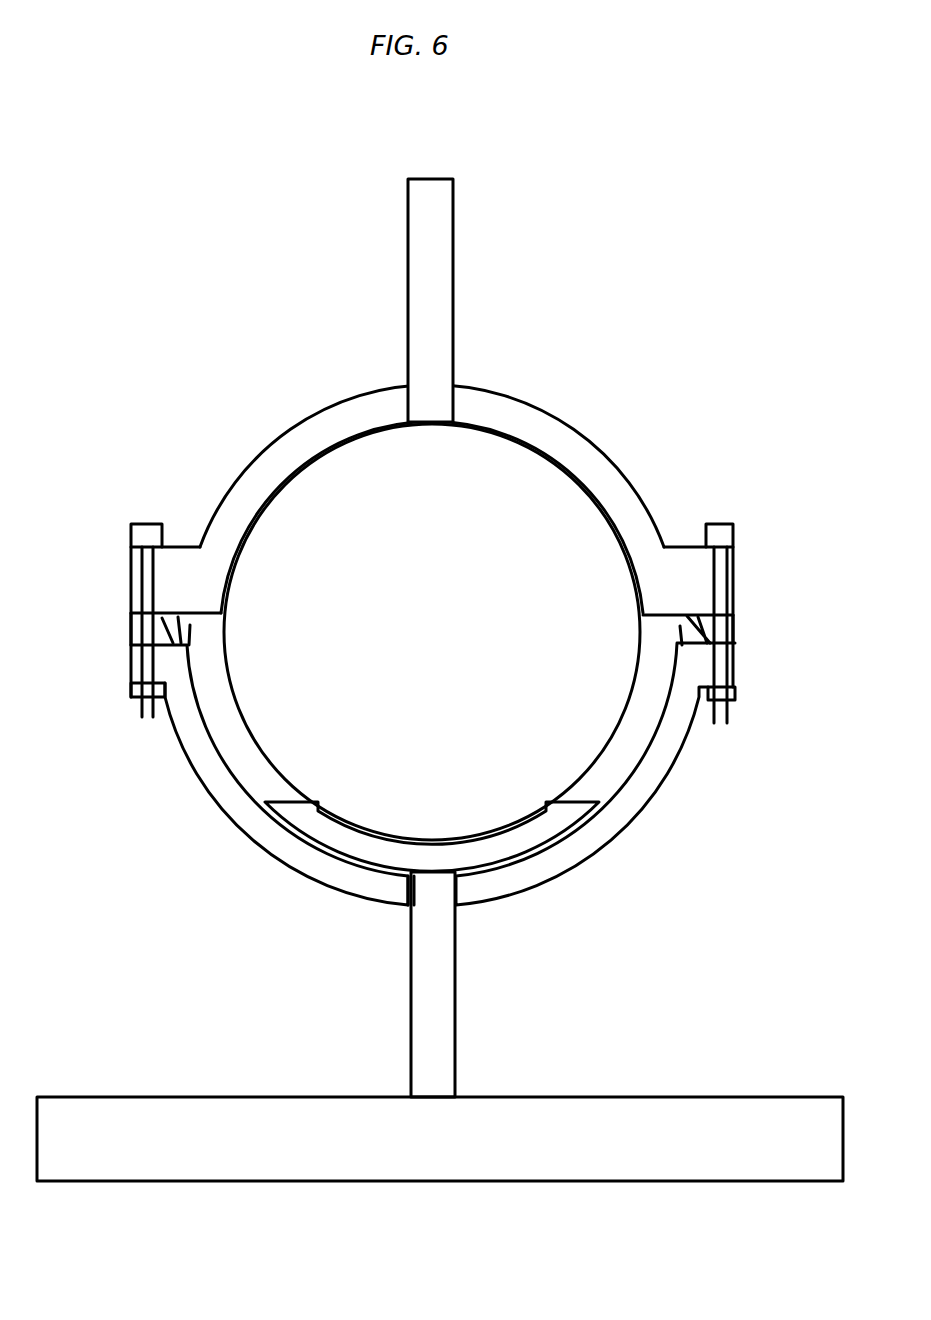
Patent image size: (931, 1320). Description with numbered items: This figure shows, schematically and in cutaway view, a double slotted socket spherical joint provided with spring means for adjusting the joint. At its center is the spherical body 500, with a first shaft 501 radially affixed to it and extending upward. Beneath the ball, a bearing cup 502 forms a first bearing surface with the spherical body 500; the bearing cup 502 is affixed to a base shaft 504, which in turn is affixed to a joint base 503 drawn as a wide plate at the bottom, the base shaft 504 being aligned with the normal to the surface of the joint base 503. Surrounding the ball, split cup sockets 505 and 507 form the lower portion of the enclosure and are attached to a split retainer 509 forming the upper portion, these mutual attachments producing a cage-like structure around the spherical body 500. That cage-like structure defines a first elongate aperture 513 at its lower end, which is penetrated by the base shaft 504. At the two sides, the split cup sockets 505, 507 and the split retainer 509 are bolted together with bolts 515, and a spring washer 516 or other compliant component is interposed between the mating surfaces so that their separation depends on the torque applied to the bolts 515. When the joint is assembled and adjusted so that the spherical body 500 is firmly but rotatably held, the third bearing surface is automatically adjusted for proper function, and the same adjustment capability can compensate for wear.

The spherical body 500 is at (462, 649).
The first shaft 501 is at (433, 283).
The bearing cup 502 is at (467, 853).
The joint base 503 is at (457, 1155).
The base shaft 504 is at (432, 1022).
The split cup socket 505 is at (210, 767).
The split cup socket 507 is at (645, 784).
The split retainer 509 is at (566, 448).
The first elongate aperture 513 is at (411, 900).
The bolt 515 is at (148, 522).
The spring washer 516 is at (175, 637).